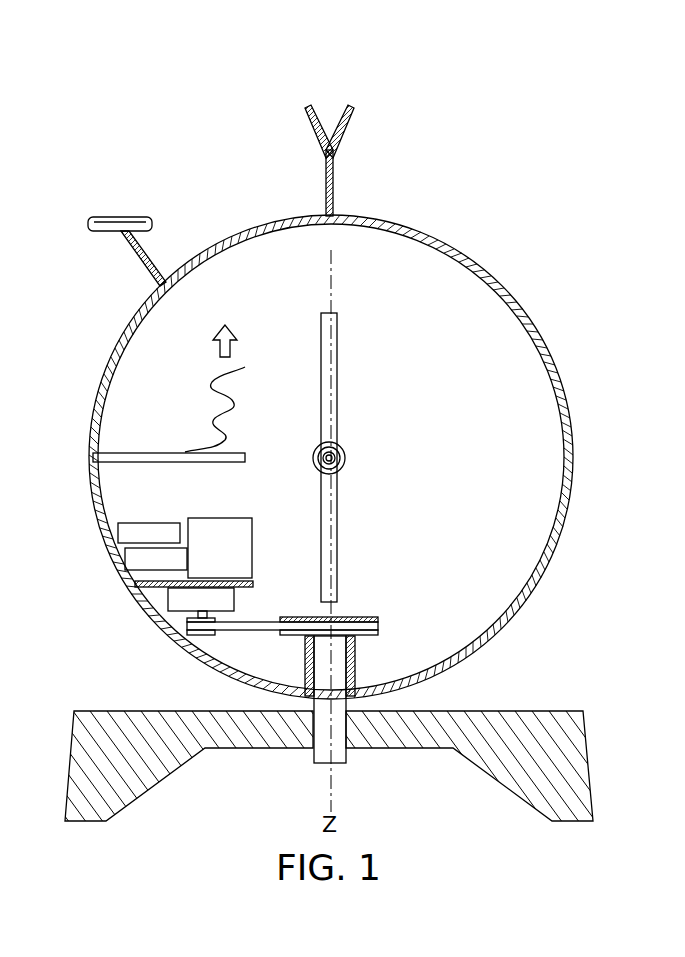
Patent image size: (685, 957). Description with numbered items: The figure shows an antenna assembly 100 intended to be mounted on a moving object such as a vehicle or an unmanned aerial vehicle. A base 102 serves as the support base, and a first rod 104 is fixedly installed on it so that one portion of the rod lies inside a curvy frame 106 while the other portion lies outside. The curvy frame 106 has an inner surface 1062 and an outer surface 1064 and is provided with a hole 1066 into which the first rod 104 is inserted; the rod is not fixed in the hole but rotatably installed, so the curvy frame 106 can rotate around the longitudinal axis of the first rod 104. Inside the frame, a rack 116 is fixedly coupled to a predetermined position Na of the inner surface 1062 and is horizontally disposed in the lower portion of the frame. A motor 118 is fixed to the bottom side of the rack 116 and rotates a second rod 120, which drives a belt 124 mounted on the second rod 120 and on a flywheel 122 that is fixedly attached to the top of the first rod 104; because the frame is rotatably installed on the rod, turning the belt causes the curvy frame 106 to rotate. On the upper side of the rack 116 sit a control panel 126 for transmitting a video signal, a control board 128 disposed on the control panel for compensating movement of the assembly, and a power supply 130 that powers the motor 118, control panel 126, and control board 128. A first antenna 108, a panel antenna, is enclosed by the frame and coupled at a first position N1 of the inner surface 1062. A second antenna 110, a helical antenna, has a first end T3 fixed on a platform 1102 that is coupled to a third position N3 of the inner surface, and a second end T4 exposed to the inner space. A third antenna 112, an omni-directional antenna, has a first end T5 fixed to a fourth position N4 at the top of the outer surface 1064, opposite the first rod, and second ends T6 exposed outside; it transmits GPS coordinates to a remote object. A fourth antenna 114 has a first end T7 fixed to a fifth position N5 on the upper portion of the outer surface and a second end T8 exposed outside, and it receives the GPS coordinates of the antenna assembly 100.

The antenna assembly 100 is at (594, 104).
The base 102 is at (578, 766).
The first rod 104 is at (338, 758).
The curvy frame 106 is at (466, 262).
The inner surface 1062 is at (492, 300).
The outer surface 1064 is at (552, 346).
The hole 1066 is at (342, 674).
The first antenna 108 is at (338, 522).
The second antenna 110 is at (222, 390).
The platform 1102 is at (133, 458).
The third antenna 112 is at (336, 166).
The fourth antenna 114 is at (122, 224).
The rack 116 is at (160, 590).
The motor 118 is at (178, 607).
The second rod 120 is at (195, 633).
The flywheel 122 is at (375, 617).
The belt 124 is at (266, 631).
The control panel 126 is at (135, 558).
The control board 128 is at (128, 532).
The power supply 130 is at (205, 530).
The first position N1 is at (345, 458).
The third position N3 is at (100, 457).
The fourth position N4 is at (323, 214).
The fifth position N5 is at (176, 268).
The predetermined position Na is at (115, 580).
The first end T3 is at (184, 450).
The second end T4 is at (250, 360).
The first end T5 is at (341, 212).
The second end T6 is at (340, 105).
The first end T7 is at (156, 287).
The second end T8 is at (85, 213).